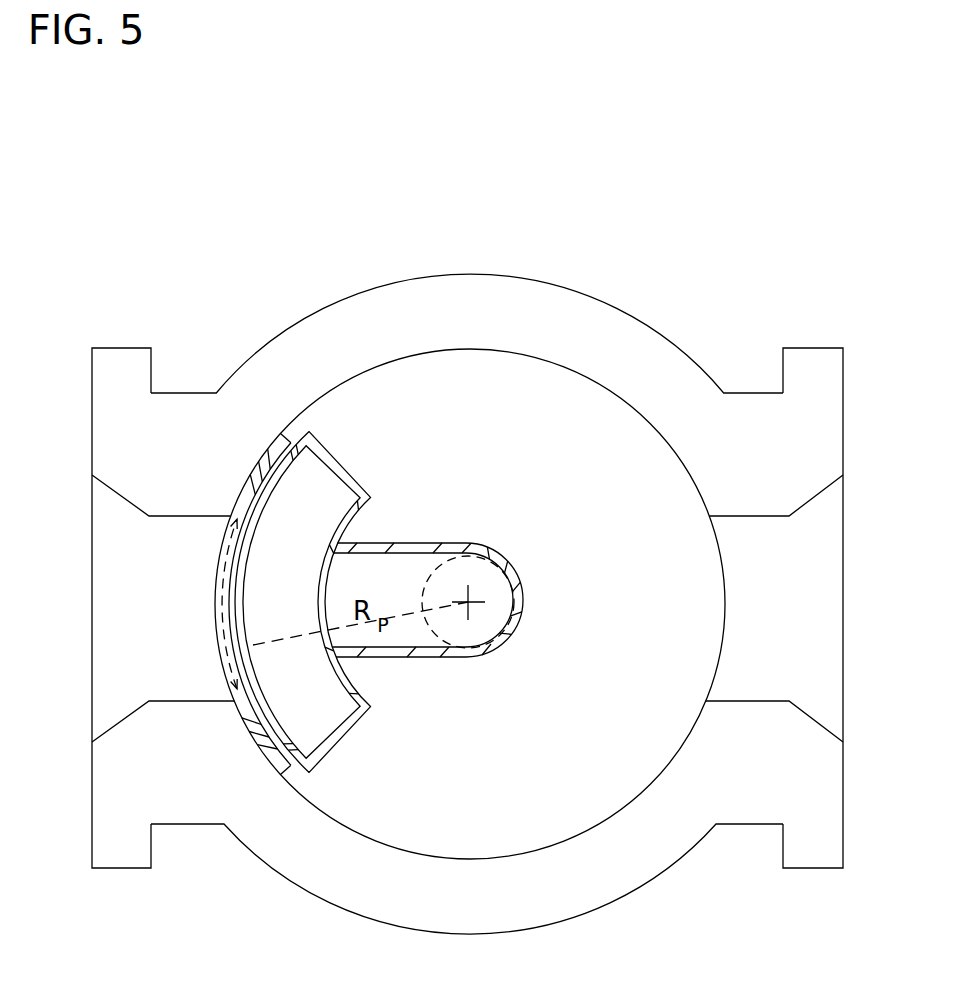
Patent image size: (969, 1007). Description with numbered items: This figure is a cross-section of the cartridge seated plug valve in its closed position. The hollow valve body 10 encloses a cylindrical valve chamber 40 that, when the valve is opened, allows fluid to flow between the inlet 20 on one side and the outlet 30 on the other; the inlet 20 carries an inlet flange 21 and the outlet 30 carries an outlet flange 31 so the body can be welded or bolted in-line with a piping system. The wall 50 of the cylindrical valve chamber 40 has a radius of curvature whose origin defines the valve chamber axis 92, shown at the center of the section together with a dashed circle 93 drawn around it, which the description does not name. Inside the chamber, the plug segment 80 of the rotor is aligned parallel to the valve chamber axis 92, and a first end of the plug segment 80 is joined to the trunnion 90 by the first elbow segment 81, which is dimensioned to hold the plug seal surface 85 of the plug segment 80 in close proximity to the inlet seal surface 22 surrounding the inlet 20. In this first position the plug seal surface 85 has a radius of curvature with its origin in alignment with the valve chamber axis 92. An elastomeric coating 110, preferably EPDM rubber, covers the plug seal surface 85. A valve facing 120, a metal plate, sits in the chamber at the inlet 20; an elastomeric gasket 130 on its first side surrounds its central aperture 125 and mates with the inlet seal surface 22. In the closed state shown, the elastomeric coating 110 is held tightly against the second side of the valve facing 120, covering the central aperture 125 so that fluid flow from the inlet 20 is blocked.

The hollow valve body 10 is at (567, 922).
The inlet 20 is at (168, 659).
The inlet flange 21 is at (140, 914).
The inlet seal surface 22 is at (262, 743).
The outlet 30 is at (737, 622).
The outlet flange 31 is at (822, 924).
The cylindrical valve chamber 40 is at (565, 618).
The wall 50 is at (662, 768).
The plug segment 80 is at (266, 614).
The first elbow segment 81 is at (413, 651).
The plug seal surface 85 is at (257, 542).
The trunnion 90 is at (482, 553).
The valve chamber axis 92 is at (468, 602).
The pivot circle 93 is at (468, 602).
The elastomeric coating 110 is at (247, 653).
The valve facing 120 is at (267, 753).
The central aperture 125 is at (226, 592).
The elastomeric gasket 130 is at (247, 708).